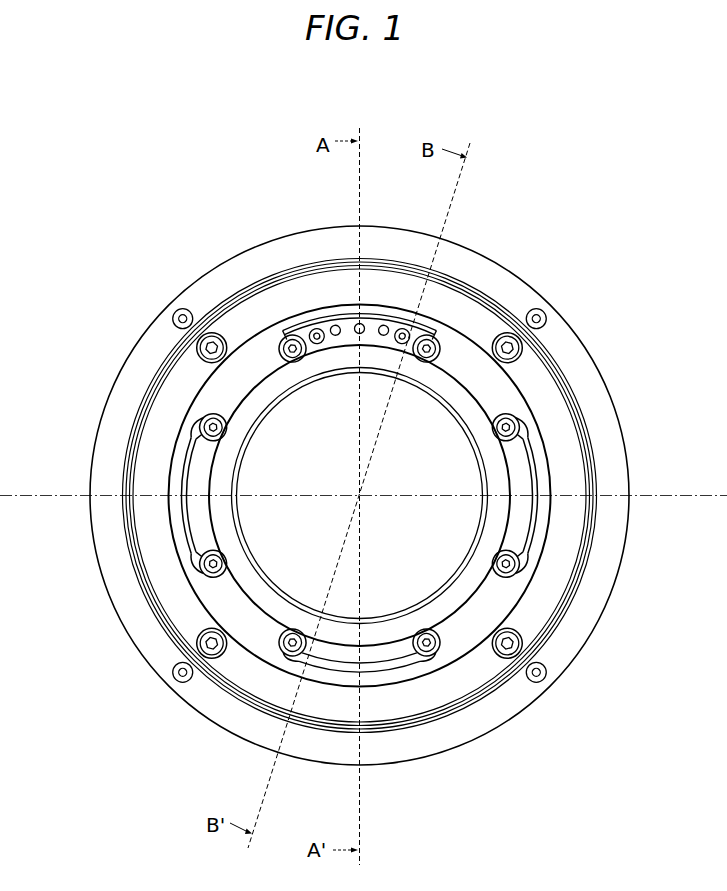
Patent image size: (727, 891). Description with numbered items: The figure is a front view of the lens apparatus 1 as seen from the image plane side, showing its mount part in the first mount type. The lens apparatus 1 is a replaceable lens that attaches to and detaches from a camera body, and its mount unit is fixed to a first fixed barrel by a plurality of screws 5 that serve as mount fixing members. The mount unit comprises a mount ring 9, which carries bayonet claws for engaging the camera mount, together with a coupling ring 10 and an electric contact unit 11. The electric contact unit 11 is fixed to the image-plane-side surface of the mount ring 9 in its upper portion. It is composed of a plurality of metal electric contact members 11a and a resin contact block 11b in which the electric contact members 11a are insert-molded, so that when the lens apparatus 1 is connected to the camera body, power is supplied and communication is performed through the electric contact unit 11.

The lens apparatus 1 is at (108, 314).
The screws 5 is at (513, 350).
The mount ring 9 is at (500, 395).
The coupling ring 10 is at (165, 418).
The electric contact unit 11 is at (207, 145).
The electric contact members 11a is at (331, 323).
The contact block 11b is at (345, 321).